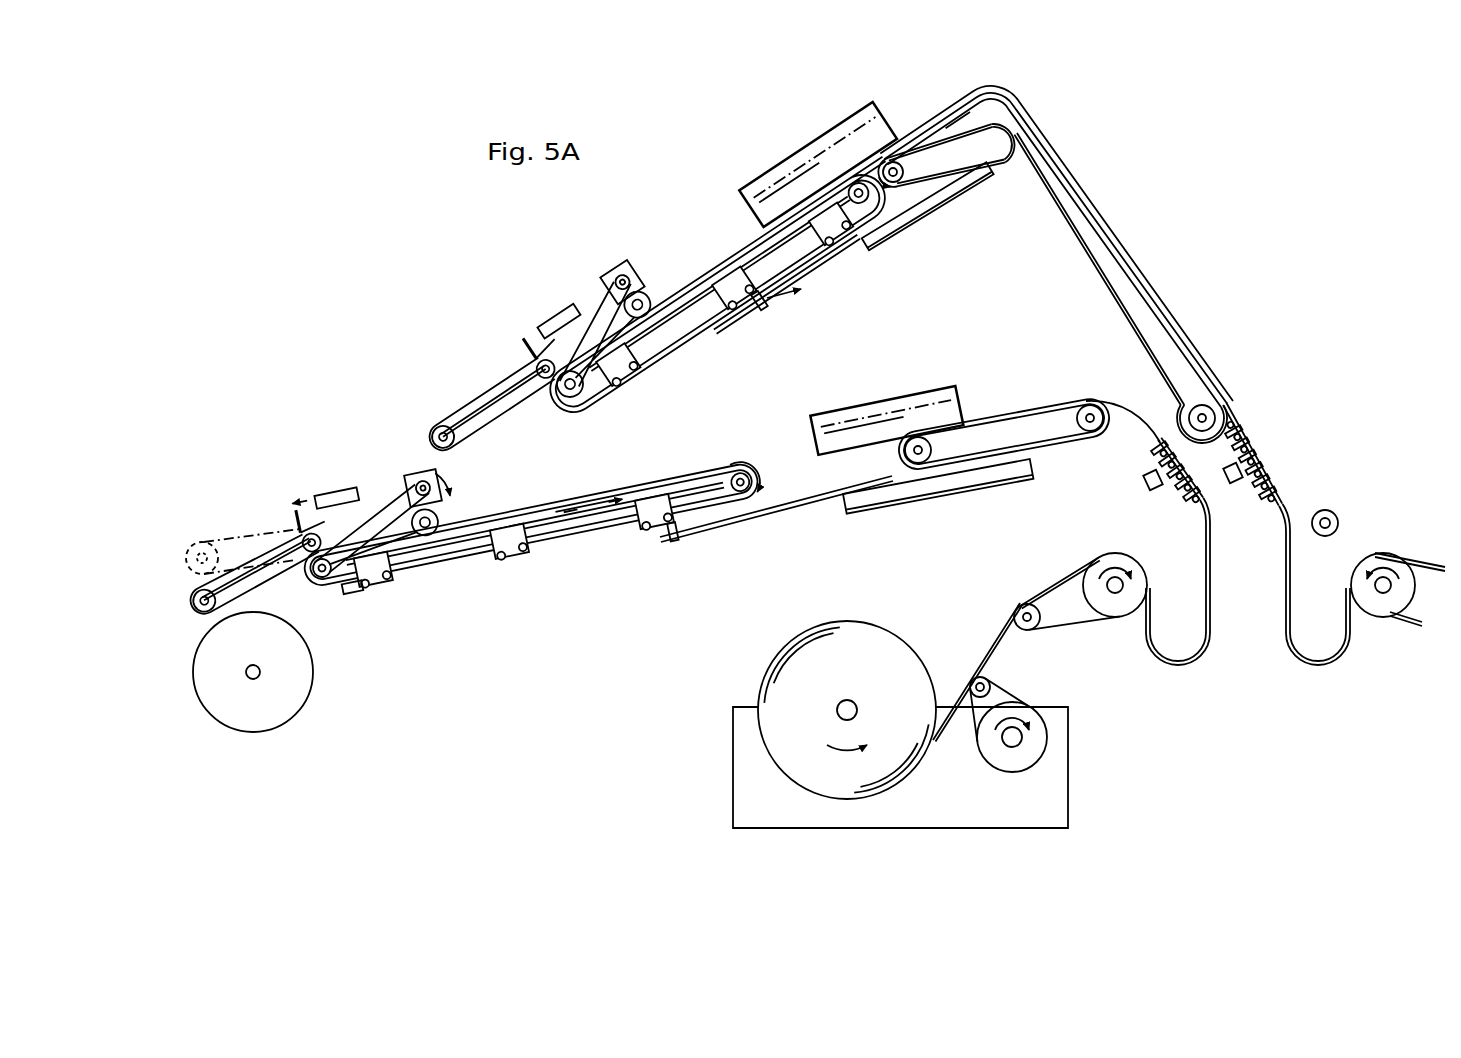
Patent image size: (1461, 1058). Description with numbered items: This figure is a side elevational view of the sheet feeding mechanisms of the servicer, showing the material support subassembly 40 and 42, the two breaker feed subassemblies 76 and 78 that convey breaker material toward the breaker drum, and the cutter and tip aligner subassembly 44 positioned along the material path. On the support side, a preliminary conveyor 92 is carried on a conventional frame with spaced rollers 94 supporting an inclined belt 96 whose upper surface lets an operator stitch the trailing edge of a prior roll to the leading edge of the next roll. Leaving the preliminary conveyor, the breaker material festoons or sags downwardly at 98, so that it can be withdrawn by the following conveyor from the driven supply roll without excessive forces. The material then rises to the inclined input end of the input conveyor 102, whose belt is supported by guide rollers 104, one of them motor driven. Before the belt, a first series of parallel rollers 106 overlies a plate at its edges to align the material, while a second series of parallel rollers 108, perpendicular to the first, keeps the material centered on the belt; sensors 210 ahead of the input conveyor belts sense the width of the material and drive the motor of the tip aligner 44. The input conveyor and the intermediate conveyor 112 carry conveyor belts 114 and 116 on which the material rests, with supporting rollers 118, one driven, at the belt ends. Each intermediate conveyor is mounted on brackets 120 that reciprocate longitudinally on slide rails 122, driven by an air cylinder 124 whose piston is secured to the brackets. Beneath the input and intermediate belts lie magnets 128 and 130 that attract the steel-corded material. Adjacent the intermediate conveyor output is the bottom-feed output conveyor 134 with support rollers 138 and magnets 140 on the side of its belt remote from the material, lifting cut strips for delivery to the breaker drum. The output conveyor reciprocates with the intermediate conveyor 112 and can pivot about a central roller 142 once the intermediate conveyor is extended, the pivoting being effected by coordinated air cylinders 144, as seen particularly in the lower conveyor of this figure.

The material support subassembly 40 is at (907, 781).
The material support subassembly 42 is at (1410, 630).
The cutter and tip aligner subassembly 44 is at (782, 158).
The breaker feed subassembly 76 is at (566, 561).
The breaker feed subassembly 78 is at (674, 353).
The preliminary conveyor 92 is at (1111, 553).
The rollers 94 is at (1034, 631).
The inclined belt 96 is at (1072, 636).
The festoon 98 is at (1213, 645).
The input conveyor 102 is at (1068, 234).
The guide rollers 104 is at (894, 162).
The parallel rollers 106 is at (1238, 426).
The second series of parallel rollers 108 is at (1123, 405).
The intermediate conveyor 112 is at (1100, 208).
The conveyor belt 114 is at (970, 414).
The conveyor belt 116 is at (672, 485).
The supporting rollers 118 is at (584, 396).
The brackets 120 is at (751, 300).
The slide rails 122 is at (813, 263).
The air cylinder 124 is at (936, 206).
The magnets 128 is at (1048, 137).
The magnets 130 is at (722, 283).
The output conveyor 134 is at (465, 400).
The support rollers 138 is at (430, 437).
The magnets 140 is at (522, 378).
The central roller 142 is at (543, 386).
The air cylinders 144 is at (582, 320).
The sensors 210 is at (1228, 470).